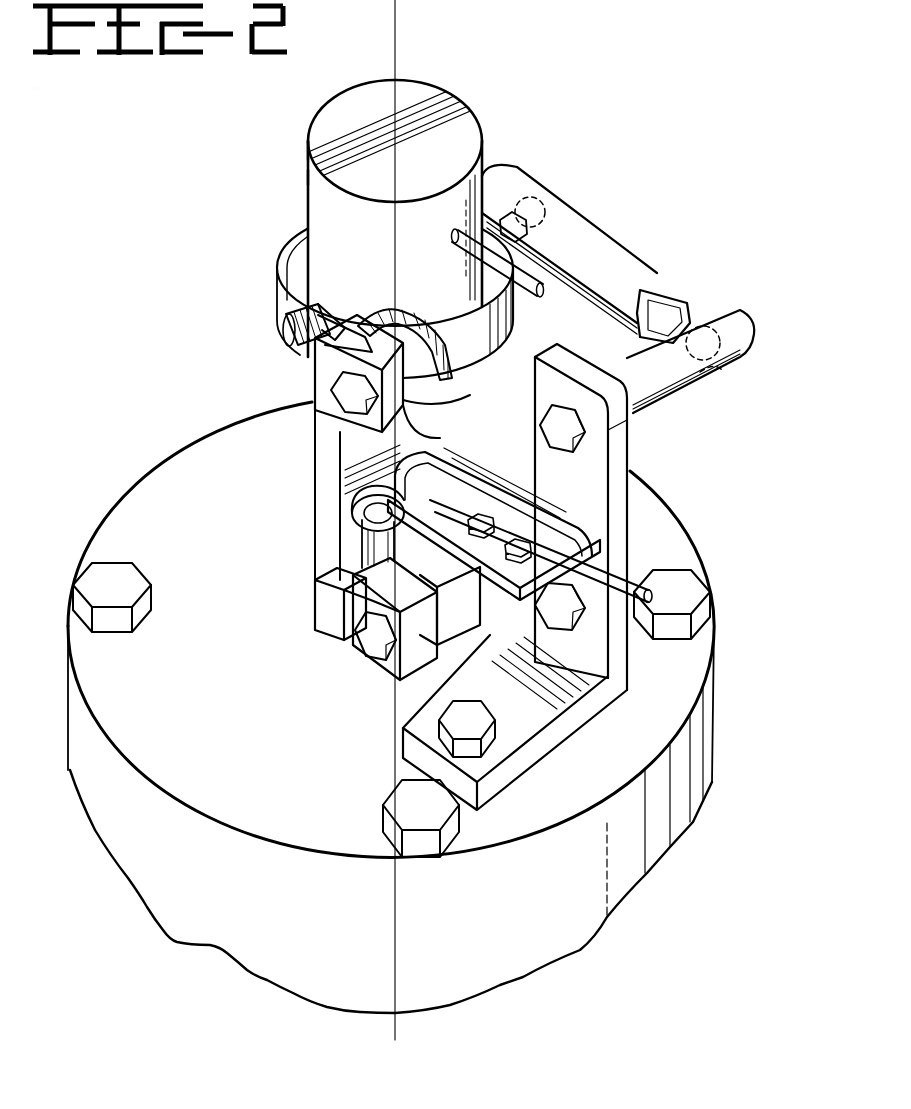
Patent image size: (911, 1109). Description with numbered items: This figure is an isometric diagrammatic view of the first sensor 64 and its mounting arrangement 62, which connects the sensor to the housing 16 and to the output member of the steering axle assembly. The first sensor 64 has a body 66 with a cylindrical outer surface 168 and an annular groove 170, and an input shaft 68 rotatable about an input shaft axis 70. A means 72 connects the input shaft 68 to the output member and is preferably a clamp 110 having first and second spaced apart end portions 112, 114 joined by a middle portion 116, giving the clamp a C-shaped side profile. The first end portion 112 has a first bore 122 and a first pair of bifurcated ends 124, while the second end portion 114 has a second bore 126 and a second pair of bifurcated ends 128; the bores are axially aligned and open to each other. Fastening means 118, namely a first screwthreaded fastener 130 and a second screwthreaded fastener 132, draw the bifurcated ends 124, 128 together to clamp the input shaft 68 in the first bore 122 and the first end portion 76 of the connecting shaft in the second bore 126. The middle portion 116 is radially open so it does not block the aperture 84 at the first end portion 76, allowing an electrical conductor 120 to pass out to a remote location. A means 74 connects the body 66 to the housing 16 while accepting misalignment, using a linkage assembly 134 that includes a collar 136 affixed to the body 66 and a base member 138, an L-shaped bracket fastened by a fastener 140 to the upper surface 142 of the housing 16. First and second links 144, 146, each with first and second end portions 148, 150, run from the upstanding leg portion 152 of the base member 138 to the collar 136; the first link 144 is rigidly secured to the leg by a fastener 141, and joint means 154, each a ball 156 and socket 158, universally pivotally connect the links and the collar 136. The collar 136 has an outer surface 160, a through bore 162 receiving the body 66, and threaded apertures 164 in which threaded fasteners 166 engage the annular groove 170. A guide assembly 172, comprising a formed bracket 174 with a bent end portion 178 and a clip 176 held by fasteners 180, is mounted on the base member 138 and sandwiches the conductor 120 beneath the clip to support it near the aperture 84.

The housing 16 is at (75, 712).
The mounting arrangement 62 is at (712, 232).
The first sensor 64 is at (444, 172).
The body 66 is at (308, 143).
The input shaft 68 is at (322, 357).
The input shaft axis 70 is at (399, 58).
The means for connecting the input shaft to the output member 72 is at (292, 492).
The means for connecting the body to the housing 74 is at (620, 206).
The first end portion of the connecting shaft 76 is at (362, 552).
The aperture 84 is at (344, 572).
The clamp 110 is at (320, 458).
The first end portion 112 is at (322, 375).
The second end portion 114 is at (322, 604).
The middle portion 116 is at (407, 442).
The fastening means 118 is at (310, 365).
The electrical conductor 120 is at (620, 568).
The first bore 122 is at (394, 312).
The first pair of bifurcated ends 124 is at (447, 395).
The second bore 126 is at (336, 605).
The second pair of bifurcated ends 128 is at (430, 655).
The first screwthreaded fastener 130 is at (342, 402).
The second screwthreaded fastener 132 is at (368, 655).
The linkage assembly 134 is at (612, 143).
The collar 136 is at (298, 240).
The base member 138 is at (620, 665).
The fastener 140 is at (473, 713).
The hex bolt 141 is at (553, 430).
The upper surface 142 is at (655, 490).
The first link 144 is at (673, 390).
The second link 146 is at (620, 242).
The first end portion 148 is at (656, 284).
The second end portion 150 is at (512, 175).
The upstanding leg portion 152 is at (620, 447).
The joint means 154 is at (538, 196).
The ball 156 is at (548, 203).
The socket 158 is at (535, 252).
The outer surface 160 is at (277, 285).
The through bore 162 is at (278, 258).
The threaded apertures 164 is at (330, 318).
The threaded fasteners 166 is at (284, 328).
The cylindrical outer surface 168 is at (308, 178).
The annular groove 170 is at (345, 335).
The guide assembly 172 is at (598, 518).
The formed bracket 174 is at (490, 573).
The clip 176 is at (533, 508).
The bent end portion 178 is at (352, 513).
The fasteners 180 is at (482, 516).